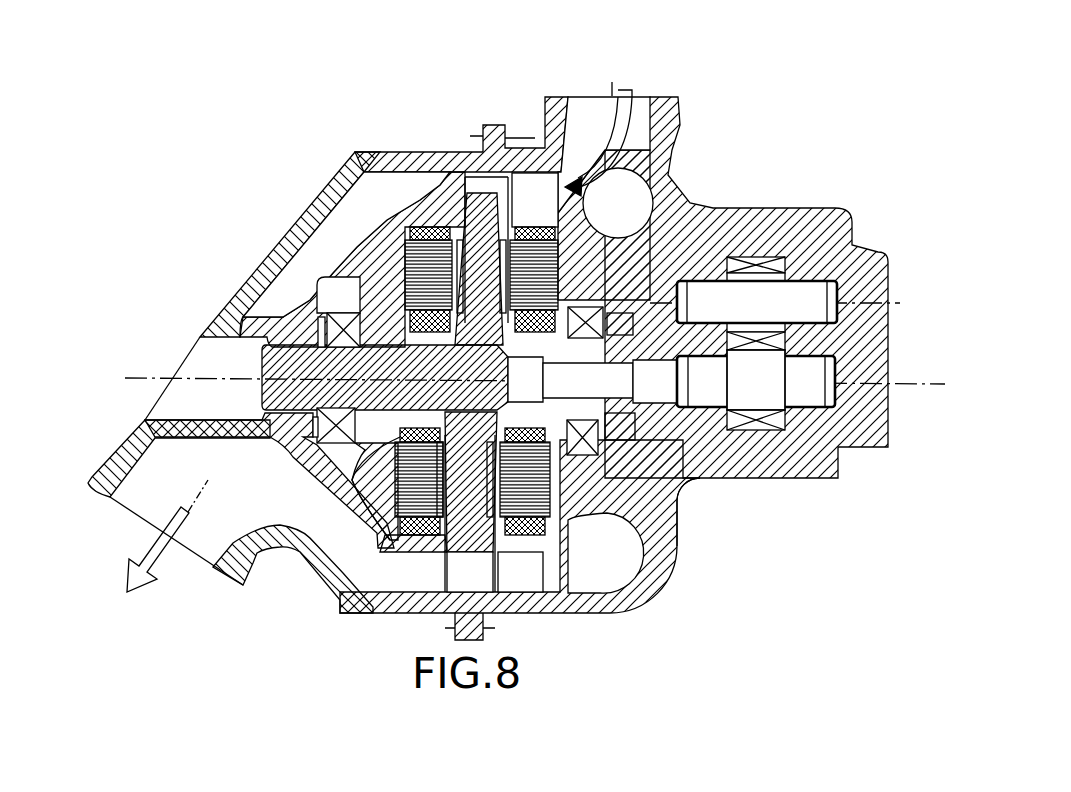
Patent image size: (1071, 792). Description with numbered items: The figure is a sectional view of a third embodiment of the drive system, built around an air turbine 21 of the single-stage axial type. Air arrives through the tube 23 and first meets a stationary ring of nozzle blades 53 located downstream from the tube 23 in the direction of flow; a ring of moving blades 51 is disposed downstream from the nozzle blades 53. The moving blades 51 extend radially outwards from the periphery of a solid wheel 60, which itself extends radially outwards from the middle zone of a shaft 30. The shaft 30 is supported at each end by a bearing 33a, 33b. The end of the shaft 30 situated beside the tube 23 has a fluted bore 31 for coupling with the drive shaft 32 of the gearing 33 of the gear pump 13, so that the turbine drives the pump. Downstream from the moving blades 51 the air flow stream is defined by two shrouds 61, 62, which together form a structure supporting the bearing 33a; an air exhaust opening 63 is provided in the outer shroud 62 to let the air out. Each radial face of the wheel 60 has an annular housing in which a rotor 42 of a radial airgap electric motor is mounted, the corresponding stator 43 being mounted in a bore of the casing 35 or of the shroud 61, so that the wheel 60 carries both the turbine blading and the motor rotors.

The gear pump 13 is at (760, 293).
The air turbine 21 is at (378, 630).
The tube 23 is at (588, 117).
The shaft 30 is at (347, 455).
The fluted bore 31 is at (677, 530).
The drive shaft 32 is at (700, 443).
The gearing 33 is at (752, 397).
The bearing 33a is at (343, 322).
The bearing 33b is at (600, 298).
The casing 35 is at (627, 158).
The rotor 42 is at (398, 215).
The stator 43 is at (363, 185).
The moving blades 51 is at (450, 230).
The nozzle blades 53 is at (537, 187).
The solid wheel 60 is at (367, 552).
The shroud 61 is at (357, 253).
The outer shroud 62 is at (243, 287).
The air exhaust opening 63 is at (150, 500).